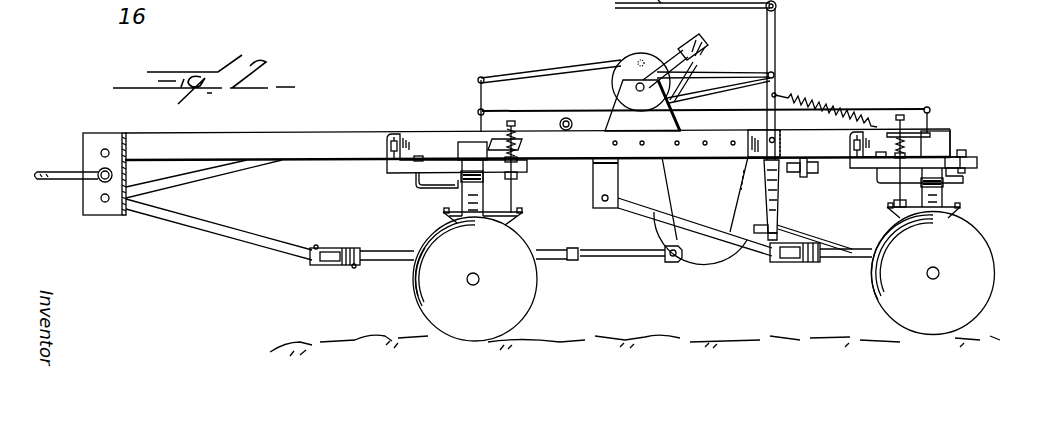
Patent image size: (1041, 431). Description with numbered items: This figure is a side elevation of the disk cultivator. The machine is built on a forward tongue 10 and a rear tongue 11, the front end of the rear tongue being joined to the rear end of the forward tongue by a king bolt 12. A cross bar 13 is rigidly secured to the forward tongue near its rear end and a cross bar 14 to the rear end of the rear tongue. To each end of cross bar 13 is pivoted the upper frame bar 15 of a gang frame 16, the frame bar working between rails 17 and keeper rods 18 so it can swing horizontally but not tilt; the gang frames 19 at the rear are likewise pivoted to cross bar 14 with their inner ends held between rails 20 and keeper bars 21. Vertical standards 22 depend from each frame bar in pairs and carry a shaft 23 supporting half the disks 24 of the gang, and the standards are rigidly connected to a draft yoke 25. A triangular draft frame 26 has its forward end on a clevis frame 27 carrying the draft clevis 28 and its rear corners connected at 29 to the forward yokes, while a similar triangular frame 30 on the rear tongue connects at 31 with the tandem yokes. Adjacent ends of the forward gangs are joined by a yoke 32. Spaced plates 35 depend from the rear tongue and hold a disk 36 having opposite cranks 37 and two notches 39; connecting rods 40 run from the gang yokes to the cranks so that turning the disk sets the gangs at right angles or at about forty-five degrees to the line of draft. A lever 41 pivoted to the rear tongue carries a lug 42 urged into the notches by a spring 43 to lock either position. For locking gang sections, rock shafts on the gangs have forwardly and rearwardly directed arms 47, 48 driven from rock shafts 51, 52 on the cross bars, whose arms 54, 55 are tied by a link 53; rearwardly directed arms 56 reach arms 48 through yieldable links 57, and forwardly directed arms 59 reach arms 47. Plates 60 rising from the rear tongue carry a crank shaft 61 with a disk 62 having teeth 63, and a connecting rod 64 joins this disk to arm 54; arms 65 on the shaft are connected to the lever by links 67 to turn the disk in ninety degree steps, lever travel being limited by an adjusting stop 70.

The forward tongue 10 is at (297, 122).
The rear tongue 11 is at (812, 140).
The king bolt 12 is at (566, 117).
The cross bar 13 is at (463, 148).
The cross bar 14 is at (952, 148).
The upper frame bar 15 is at (448, 190).
The gang frame 16 is at (512, 310).
The rail 17 is at (433, 157).
The keeper rod 18 is at (417, 188).
The gang frame 19 is at (935, 210).
The rail 20 is at (982, 166).
The keeper bar 21 is at (966, 179).
The vertical standard 22 is at (488, 207).
The shaft 23 is at (473, 287).
The disk 24 is at (428, 310).
The draft yoke 25 is at (381, 266).
The triangular draft frame 26 is at (216, 236).
The clevis frame 27 is at (106, 218).
The draft clevis 28 is at (57, 177).
The connection 29 is at (345, 248).
The triangular frame 30 is at (740, 275).
The connection 31 is at (980, 302).
The yoke 32 is at (554, 255).
The plate 35 is at (670, 172).
The disk 36 is at (704, 288).
The crank 37 is at (666, 246).
The notch 39 is at (668, 266).
The connecting rod 40 is at (615, 260).
The lever 41 is at (776, 40).
The lug 42 is at (762, 222).
The spring 43 is at (791, 100).
The forwardly directed arm 47 is at (508, 228).
The rearwardly directed arm 48 is at (458, 226).
The rock shaft 51 is at (496, 138).
The rock shaft 52 is at (931, 137).
The link 53 is at (742, 91).
The arm 54 is at (478, 97).
The arm 55 is at (932, 110).
The rearwardly directed arm 56 is at (513, 139).
The link 57 is at (520, 180).
The forwardly directed arm 59 is at (912, 130).
The plate 60 is at (627, 99).
The crank shaft 61 is at (643, 100).
The disk 62 is at (666, 70).
The tooth 63 is at (622, 63).
The connecting rod 64 is at (562, 70).
The arm 65 is at (692, 50).
The link 67 is at (740, 73).
The adjusting stop 70 is at (805, 177).